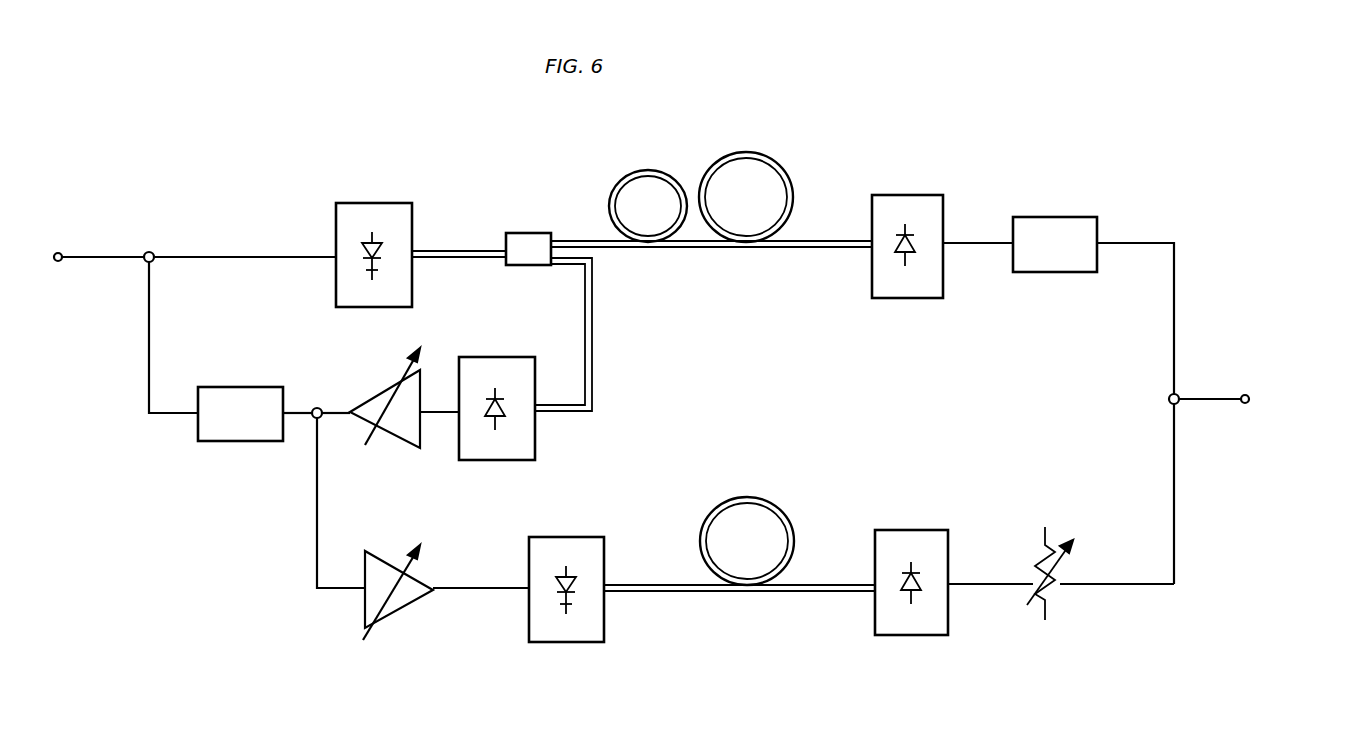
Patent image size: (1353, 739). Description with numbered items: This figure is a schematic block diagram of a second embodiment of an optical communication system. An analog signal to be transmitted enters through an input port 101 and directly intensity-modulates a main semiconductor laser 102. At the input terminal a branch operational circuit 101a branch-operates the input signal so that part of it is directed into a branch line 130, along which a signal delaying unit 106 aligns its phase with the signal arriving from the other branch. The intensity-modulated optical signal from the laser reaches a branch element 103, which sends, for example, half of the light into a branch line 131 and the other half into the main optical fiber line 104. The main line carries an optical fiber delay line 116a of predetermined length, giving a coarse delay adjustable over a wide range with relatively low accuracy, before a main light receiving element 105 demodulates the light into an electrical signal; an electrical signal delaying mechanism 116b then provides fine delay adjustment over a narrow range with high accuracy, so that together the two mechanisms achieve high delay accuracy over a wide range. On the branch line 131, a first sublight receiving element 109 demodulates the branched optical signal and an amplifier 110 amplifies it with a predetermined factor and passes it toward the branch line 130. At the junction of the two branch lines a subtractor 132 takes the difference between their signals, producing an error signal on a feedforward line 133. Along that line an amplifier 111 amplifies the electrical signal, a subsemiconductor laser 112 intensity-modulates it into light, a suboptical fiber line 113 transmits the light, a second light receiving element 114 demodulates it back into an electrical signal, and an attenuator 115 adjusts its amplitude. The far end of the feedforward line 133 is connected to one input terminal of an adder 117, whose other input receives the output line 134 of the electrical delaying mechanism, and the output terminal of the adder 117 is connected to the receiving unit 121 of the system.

The input port 101 is at (177, 258).
The branch operational circuit 101a is at (151, 248).
The main semiconductor laser 102 is at (391, 202).
The branch element 103 is at (533, 232).
The main optical fiber line 104 is at (762, 154).
The main light receiving element 105 is at (853, 266).
The signal delaying unit 106 is at (210, 441).
The first sublight receiving element 109 is at (518, 356).
The amplifier 110 is at (387, 386).
The amplifier 111 is at (404, 620).
The subsemiconductor laser 112 is at (588, 642).
The suboptical fiber line 113 is at (746, 497).
The second light receiving element 114 is at (934, 530).
The attenuator 115 is at (1043, 620).
The optical fiber delay line 116a is at (648, 170).
The electrical signal delaying mechanism 116b is at (1080, 216).
The adder 117 is at (1180, 394).
The receiving unit 121 is at (1245, 425).
The branch line 130 is at (149, 314).
The branch line 131 is at (437, 416).
The subtractor 132 is at (314, 407).
The feedforward line 133 is at (317, 547).
The output line 134 is at (1143, 242).